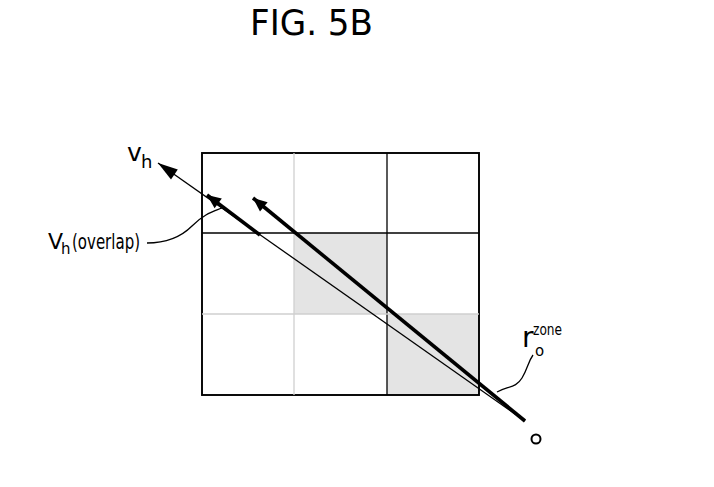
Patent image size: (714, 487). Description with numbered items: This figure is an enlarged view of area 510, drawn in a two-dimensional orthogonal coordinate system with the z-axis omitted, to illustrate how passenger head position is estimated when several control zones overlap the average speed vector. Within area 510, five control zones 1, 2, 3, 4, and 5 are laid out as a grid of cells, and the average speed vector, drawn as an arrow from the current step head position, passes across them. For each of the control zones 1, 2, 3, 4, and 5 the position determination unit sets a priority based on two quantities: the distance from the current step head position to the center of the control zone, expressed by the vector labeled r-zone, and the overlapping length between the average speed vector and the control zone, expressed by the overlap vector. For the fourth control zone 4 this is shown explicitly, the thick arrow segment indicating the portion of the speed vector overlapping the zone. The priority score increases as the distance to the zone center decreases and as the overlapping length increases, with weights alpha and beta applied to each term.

The area 510 is at (377, 274).
The control zone 1 is at (433, 354).
The control zone 2 is at (340, 273).
The control zone 3 is at (340, 354).
The control zone 4 is at (248, 193).
The control zone 5 is at (248, 273).